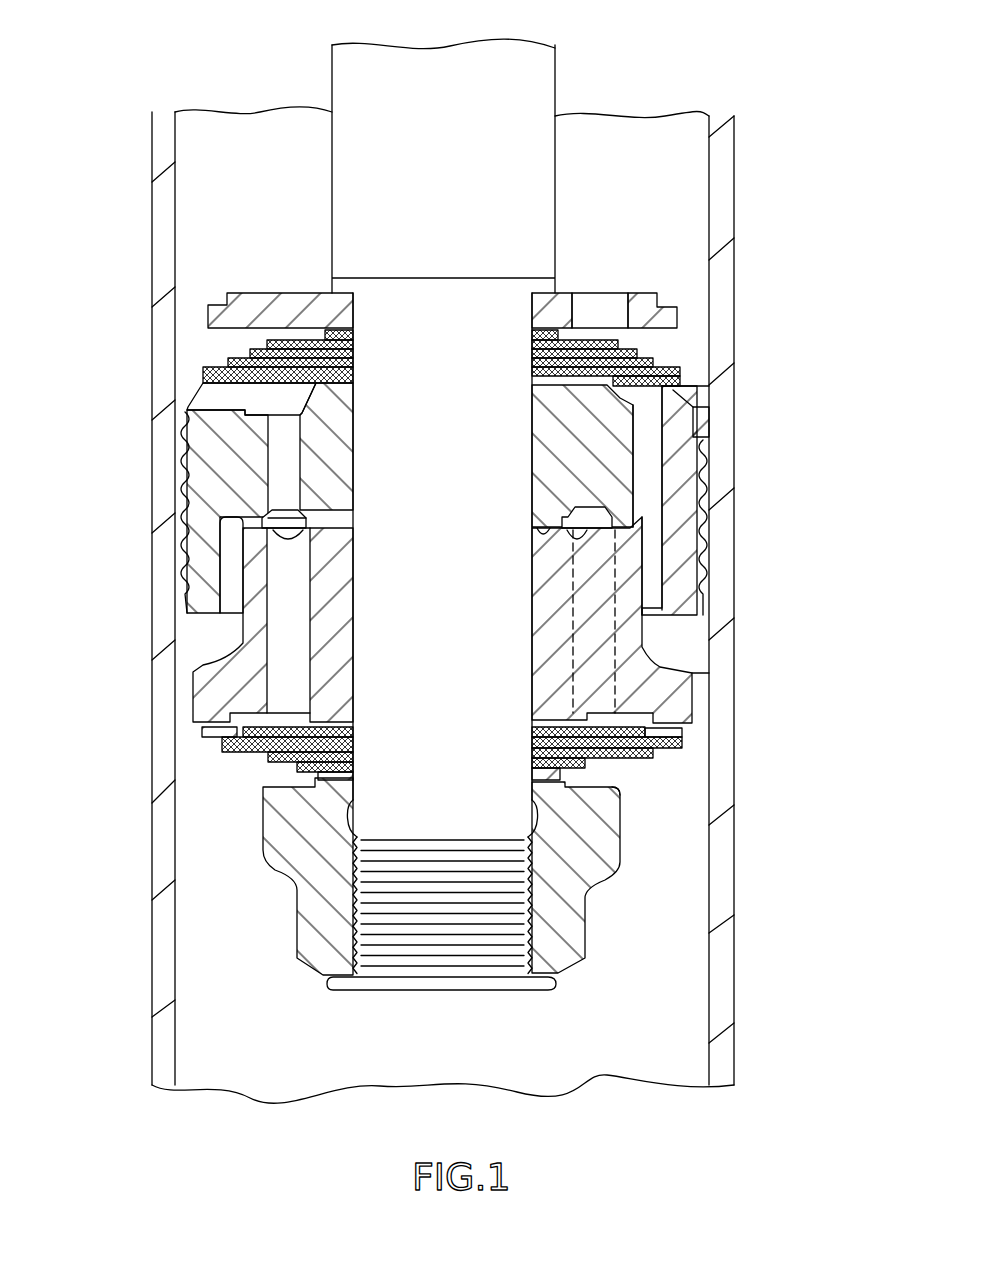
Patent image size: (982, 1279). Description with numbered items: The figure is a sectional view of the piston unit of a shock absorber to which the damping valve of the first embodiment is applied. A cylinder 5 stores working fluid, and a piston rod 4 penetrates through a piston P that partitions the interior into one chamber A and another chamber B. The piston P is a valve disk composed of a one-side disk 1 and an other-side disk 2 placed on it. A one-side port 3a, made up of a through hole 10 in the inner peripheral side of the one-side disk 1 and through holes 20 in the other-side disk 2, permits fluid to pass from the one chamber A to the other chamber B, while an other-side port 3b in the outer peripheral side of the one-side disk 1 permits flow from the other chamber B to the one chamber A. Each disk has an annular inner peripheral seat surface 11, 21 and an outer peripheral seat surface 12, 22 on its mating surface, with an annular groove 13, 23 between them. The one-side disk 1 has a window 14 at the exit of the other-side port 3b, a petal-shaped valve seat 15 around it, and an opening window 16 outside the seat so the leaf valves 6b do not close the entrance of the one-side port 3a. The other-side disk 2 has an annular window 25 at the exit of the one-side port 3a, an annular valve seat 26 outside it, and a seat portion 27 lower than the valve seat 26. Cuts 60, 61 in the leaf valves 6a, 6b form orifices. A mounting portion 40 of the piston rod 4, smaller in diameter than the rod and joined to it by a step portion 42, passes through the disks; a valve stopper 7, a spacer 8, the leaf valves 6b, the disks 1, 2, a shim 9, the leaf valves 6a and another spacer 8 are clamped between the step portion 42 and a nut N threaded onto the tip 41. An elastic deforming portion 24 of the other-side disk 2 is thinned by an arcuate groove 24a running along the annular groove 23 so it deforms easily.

The one-side disk 1 is at (718, 402).
The other-side disk 2 is at (672, 646).
The one-side port 3a is at (262, 553).
The other-side port 3b is at (712, 472).
The piston rod 4 is at (555, 92).
The cylinder 5 is at (735, 1000).
The leaf valves 6a is at (628, 777).
The leaf valves 6b is at (205, 378).
The valve stopper 7 is at (641, 294).
The spacer 8 is at (585, 328).
The shim 9 is at (712, 690).
The through hole 10 is at (275, 452).
The inner peripheral seat surface 11 is at (545, 540).
The outer peripheral seat surface 12 is at (562, 553).
The annular groove 13 is at (562, 528).
The window 14 is at (665, 333).
The valve seat 15 is at (700, 366).
The opening window 16 is at (290, 398).
The through holes 20 is at (280, 668).
The inner peripheral seat surface 21 is at (334, 515).
The outer peripheral seat surface 22 is at (260, 513).
The annular groove 23 is at (282, 557).
The elastic deforming portion 24 is at (605, 590).
The arcuate groove 24a is at (658, 512).
The annular window 25 is at (228, 748).
The valve seat 26 is at (215, 735).
The seat portion 27 is at (330, 744).
The mounting portion 40 is at (348, 638).
The tip 41 is at (350, 905).
The step portion 42 is at (333, 304).
The cut 60 is at (698, 717).
The cut 61 is at (702, 435).
The one chamber A is at (646, 191).
The other chamber B is at (651, 1046).
The piston P is at (192, 626).
The nut N is at (709, 920).